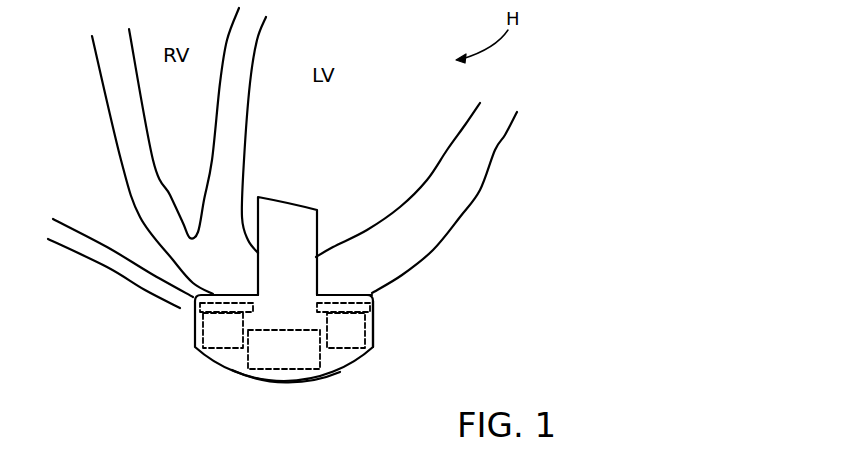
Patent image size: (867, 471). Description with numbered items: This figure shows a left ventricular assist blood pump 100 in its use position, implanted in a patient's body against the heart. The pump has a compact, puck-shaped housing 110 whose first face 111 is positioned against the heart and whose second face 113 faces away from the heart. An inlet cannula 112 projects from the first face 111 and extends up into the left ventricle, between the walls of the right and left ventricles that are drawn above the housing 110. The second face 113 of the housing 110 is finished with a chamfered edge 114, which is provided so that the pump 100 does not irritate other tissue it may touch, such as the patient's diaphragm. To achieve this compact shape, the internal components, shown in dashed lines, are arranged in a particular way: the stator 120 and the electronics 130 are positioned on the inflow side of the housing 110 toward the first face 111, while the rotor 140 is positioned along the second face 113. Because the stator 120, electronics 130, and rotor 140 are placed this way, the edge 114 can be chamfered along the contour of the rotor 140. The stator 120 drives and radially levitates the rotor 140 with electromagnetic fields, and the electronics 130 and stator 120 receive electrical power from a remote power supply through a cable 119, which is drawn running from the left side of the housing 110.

The left ventricular assist blood pump 100 is at (136, 398).
The puck-shaped housing 110 is at (223, 364).
The first face 111 is at (352, 294).
The inlet cannula 112 is at (318, 222).
The second face 113 is at (232, 372).
The chamfered edge 114 is at (373, 345).
The cable 119 is at (106, 276).
The stator 120 is at (196, 335).
The electronics 130 is at (192, 308).
The rotor 140 is at (312, 375).